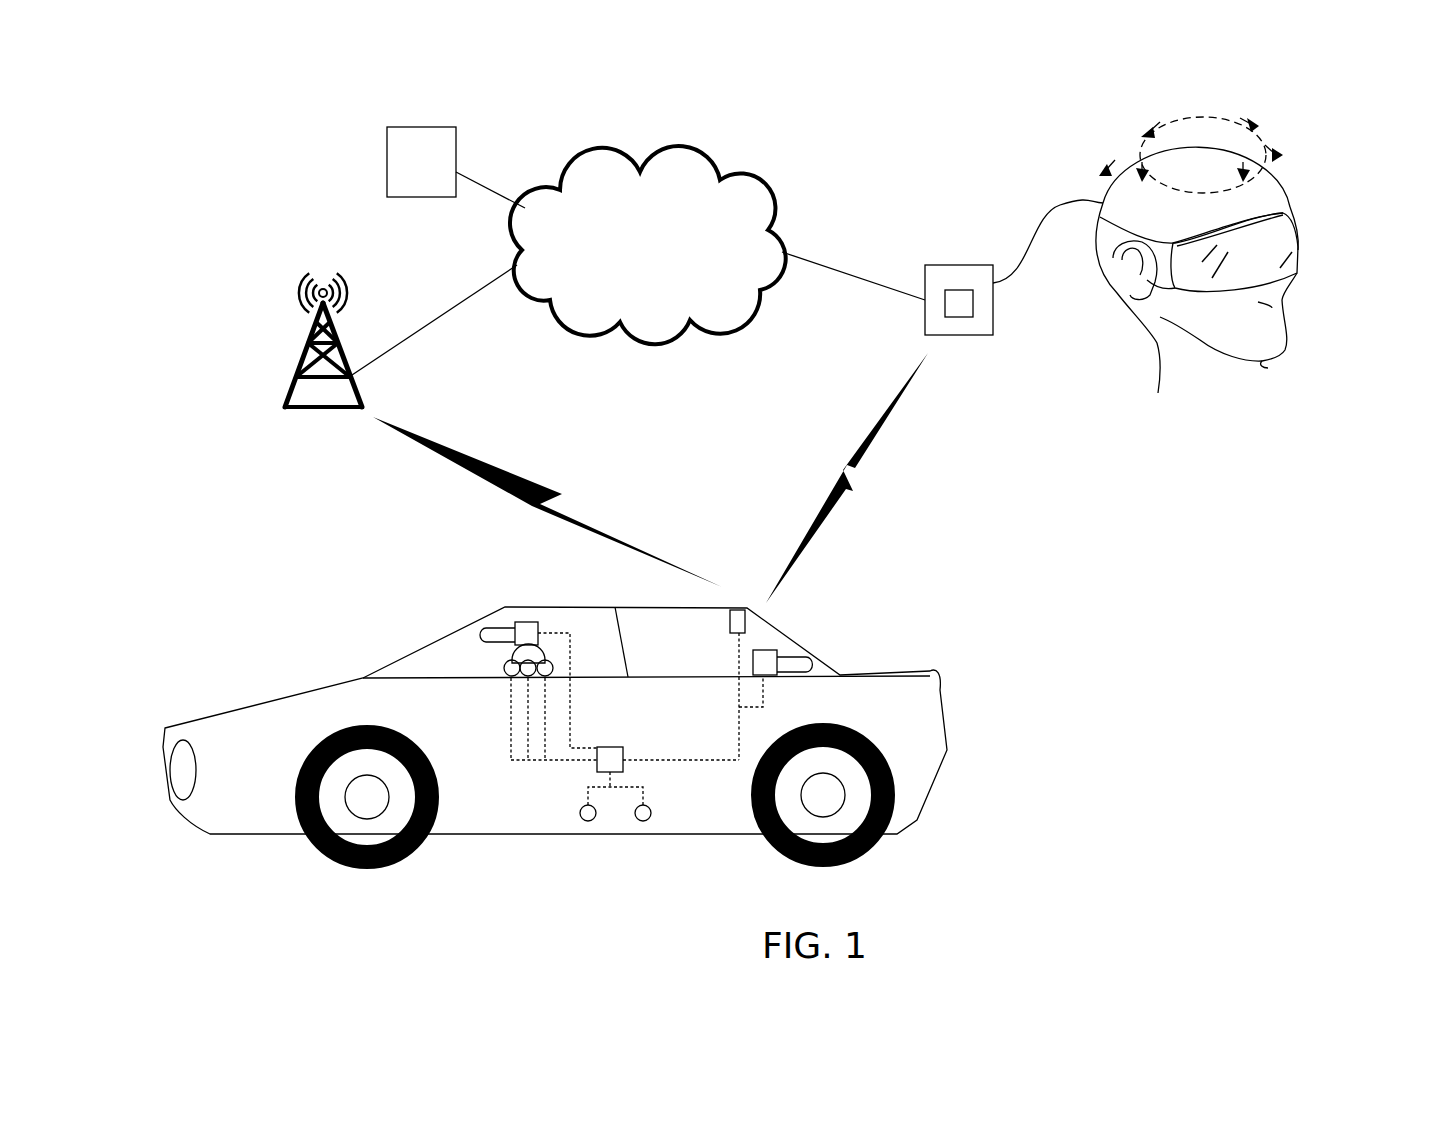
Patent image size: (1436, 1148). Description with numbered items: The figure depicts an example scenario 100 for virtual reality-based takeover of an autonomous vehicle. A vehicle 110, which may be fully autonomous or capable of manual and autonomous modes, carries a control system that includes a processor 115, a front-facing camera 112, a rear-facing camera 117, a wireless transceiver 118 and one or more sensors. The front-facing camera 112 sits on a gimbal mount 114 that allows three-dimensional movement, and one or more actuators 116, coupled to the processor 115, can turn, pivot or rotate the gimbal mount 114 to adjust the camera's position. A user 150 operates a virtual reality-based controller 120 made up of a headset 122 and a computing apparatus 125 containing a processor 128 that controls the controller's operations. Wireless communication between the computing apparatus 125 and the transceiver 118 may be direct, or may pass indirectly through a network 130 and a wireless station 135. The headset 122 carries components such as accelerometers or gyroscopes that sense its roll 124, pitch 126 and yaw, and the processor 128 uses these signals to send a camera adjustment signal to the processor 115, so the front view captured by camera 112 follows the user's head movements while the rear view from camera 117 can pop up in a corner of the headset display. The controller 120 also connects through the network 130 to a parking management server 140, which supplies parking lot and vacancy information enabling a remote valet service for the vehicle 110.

The scenario 100 is at (661, 82).
The vehicle 110 is at (882, 670).
The front-facing camera 112 is at (530, 622).
The gimbal mount 114 is at (507, 657).
The processor 115 is at (608, 745).
The actuators 116 is at (504, 668).
The rear-facing camera 117 is at (767, 650).
The wireless transceiver 118 is at (733, 635).
The virtual reality-based controller 120 is at (1112, 395).
The headset 122 is at (1298, 253).
The roll 124 is at (1227, 117).
The pitch 126 is at (1172, 122).
The computing apparatus 125 is at (937, 265).
The processor 128 is at (960, 317).
The network 130 is at (737, 168).
The wireless station 135 is at (342, 347).
The parking management server 140 is at (398, 127).
The user 150 is at (1326, 144).